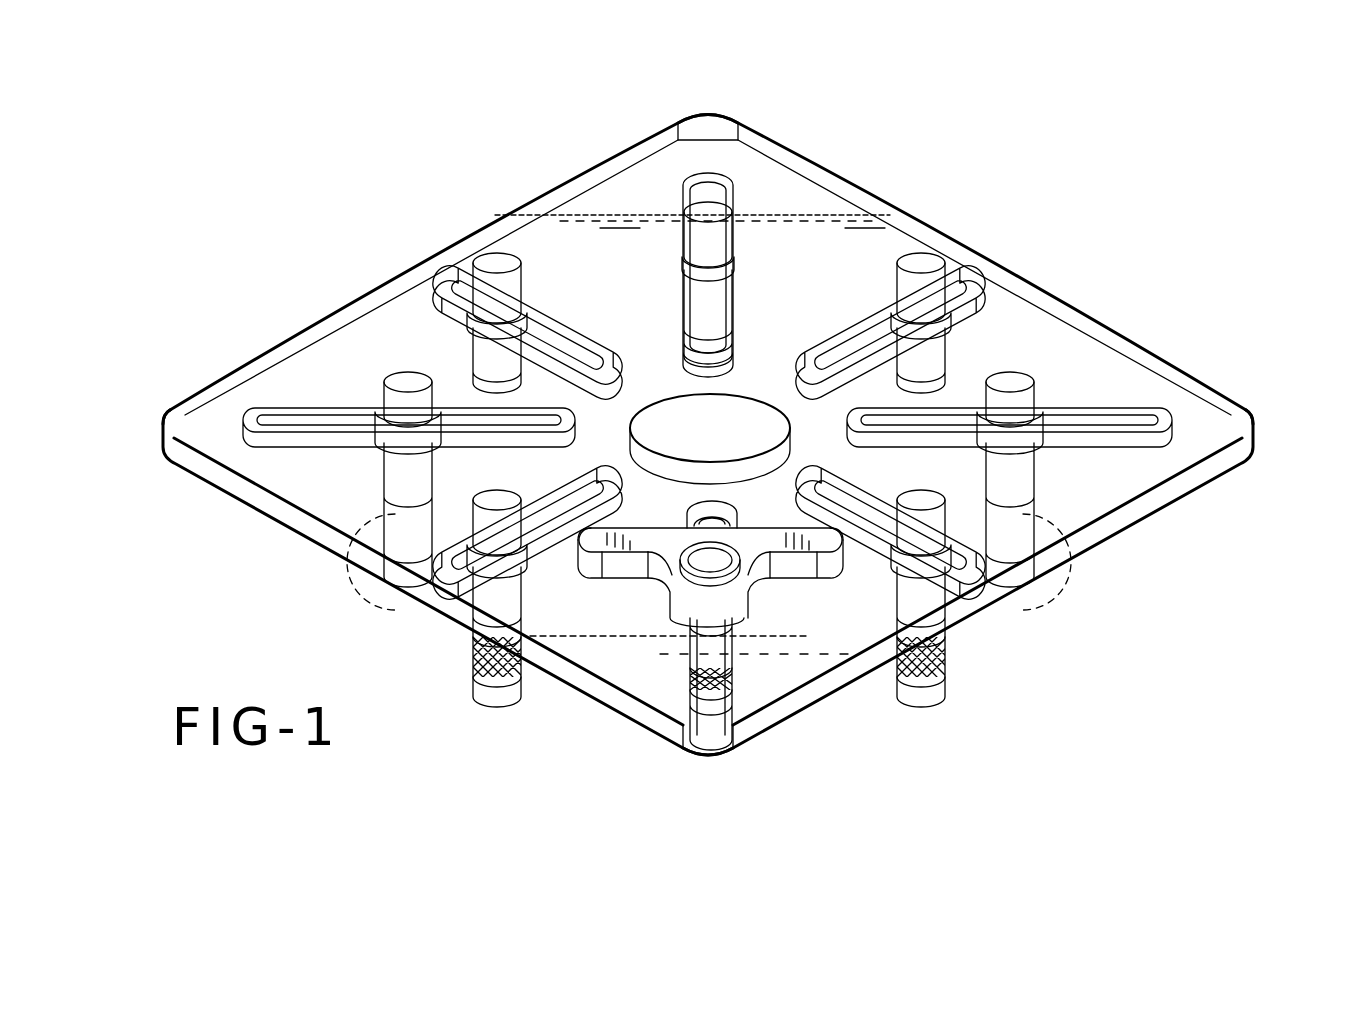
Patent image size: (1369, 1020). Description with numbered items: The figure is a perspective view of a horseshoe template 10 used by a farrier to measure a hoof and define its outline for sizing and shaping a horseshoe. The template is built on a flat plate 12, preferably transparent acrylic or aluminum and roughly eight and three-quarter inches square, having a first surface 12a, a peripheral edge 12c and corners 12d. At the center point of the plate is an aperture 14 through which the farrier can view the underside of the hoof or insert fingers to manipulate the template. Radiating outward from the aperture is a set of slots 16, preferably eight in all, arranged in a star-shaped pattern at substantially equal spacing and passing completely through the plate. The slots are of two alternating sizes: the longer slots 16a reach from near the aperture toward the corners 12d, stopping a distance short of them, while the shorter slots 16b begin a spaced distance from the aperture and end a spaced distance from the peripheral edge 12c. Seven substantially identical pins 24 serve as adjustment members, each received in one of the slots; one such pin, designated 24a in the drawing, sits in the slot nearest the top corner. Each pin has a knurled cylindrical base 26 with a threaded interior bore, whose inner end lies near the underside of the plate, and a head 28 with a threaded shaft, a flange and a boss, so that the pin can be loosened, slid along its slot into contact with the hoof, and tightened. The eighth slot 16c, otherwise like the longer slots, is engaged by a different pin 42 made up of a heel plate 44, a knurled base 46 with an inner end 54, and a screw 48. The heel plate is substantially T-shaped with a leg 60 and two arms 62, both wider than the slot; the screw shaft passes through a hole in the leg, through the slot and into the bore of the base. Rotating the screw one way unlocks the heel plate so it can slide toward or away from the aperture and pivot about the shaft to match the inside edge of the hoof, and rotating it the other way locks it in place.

The horseshoe template 10 is at (1105, 182).
The flat plate 12 is at (819, 158).
The first surface 12a is at (1083, 363).
The peripheral edge 12c is at (352, 307).
The corners 12d is at (706, 114).
The aperture 14 is at (660, 396).
The slots 16 is at (360, 571).
The slots 16a is at (713, 162).
The slots 16b is at (562, 318).
The eighth slot 16c is at (695, 505).
The pins 24 is at (484, 260).
The locating pin 24a is at (674, 242).
The base 26 is at (478, 733).
The head 28 is at (510, 262).
The pin 42 is at (738, 548).
The heel plate 44 is at (628, 580).
The base 46 is at (717, 653).
The screw 48 is at (695, 560).
The inner end 54 is at (690, 655).
The leg 60 is at (745, 606).
The arms 62 is at (613, 575).